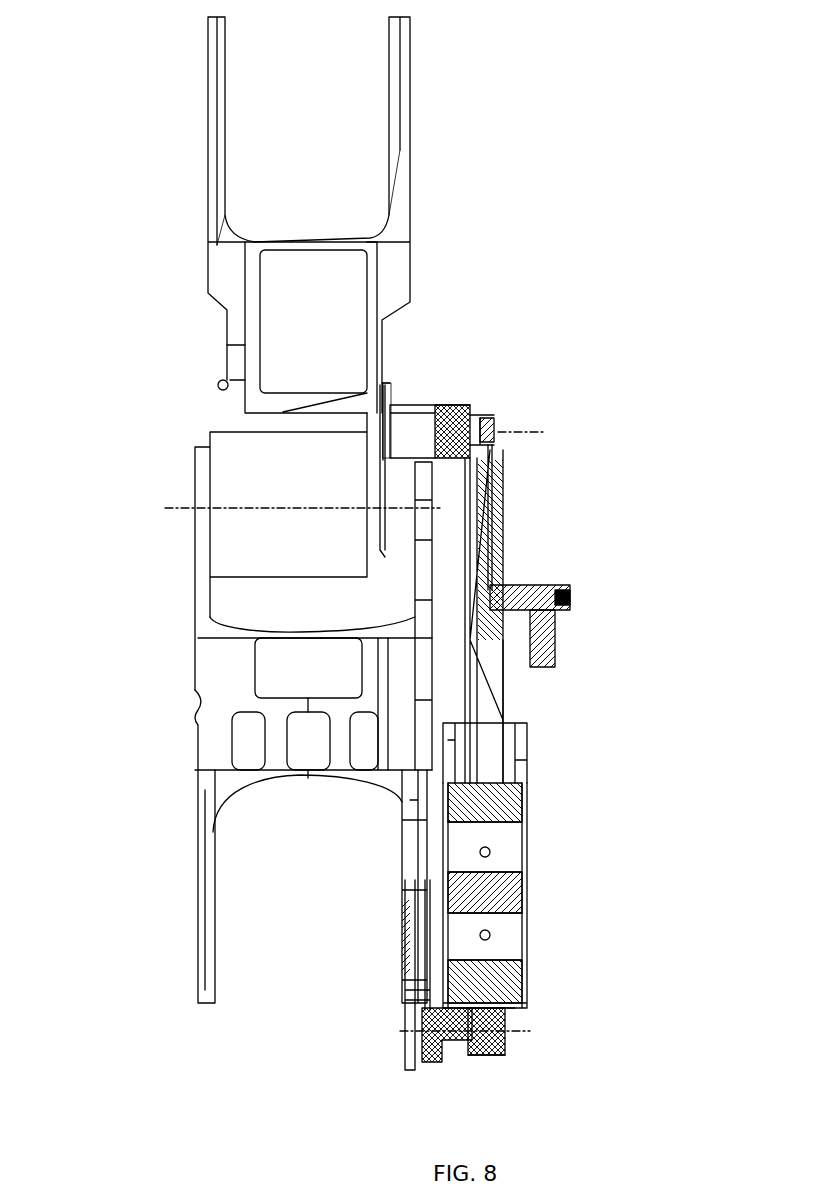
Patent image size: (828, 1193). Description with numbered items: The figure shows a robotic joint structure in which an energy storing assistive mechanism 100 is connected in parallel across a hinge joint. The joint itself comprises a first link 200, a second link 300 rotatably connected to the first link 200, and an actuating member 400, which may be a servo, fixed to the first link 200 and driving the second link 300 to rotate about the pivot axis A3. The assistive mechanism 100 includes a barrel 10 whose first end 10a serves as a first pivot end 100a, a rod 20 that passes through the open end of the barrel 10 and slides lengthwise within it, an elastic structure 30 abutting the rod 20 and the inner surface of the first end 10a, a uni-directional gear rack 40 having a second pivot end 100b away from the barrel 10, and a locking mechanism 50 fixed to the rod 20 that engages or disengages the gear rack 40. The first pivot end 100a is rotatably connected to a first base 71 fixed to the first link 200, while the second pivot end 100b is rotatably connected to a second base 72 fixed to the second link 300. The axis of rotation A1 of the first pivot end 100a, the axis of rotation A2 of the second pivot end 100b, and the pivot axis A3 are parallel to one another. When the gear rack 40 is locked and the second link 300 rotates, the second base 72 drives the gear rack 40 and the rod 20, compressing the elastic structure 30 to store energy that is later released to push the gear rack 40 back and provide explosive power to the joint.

The second link 300 is at (208, 293).
The second base 72 is at (453, 403).
The second pivot end 100b is at (495, 420).
The axis of rotation of the second pivot end A2 is at (537, 434).
The actuating member 400 is at (248, 529).
The pivot axis A3 is at (290, 508).
The uni-directional gear rack 40 is at (500, 522).
The locking mechanism 50 is at (560, 640).
The rod 20 is at (510, 702).
The first link 200 is at (205, 758).
The elastic structure 30 is at (505, 820).
The energy storing assistive mechanism 100 is at (547, 870).
The barrel 10 is at (528, 948).
The first end of the barrel 10a is at (512, 1013).
The first pivot end 100a is at (577, 1062).
The axis of rotation of the first pivot end A1 is at (483, 1038).
The first base 71 is at (447, 1045).